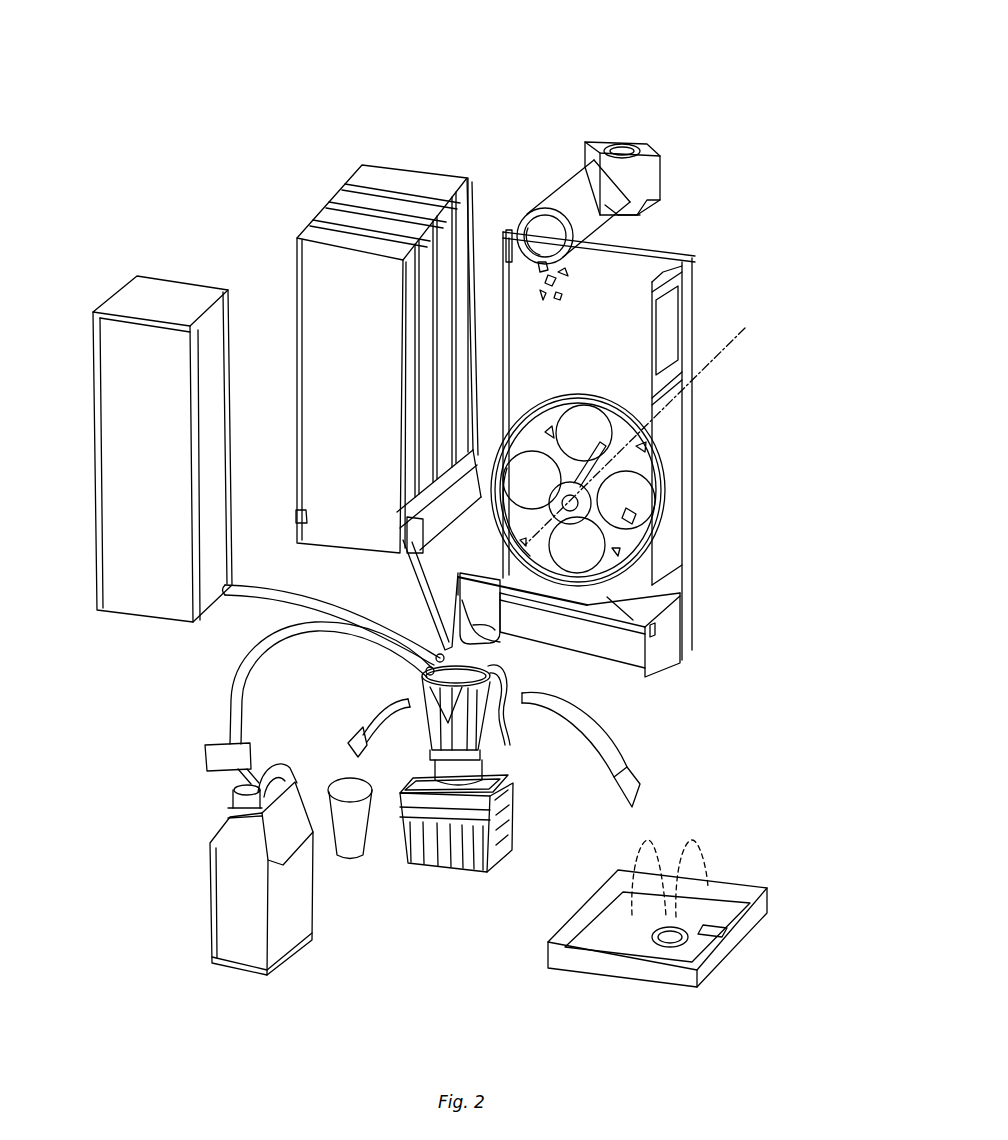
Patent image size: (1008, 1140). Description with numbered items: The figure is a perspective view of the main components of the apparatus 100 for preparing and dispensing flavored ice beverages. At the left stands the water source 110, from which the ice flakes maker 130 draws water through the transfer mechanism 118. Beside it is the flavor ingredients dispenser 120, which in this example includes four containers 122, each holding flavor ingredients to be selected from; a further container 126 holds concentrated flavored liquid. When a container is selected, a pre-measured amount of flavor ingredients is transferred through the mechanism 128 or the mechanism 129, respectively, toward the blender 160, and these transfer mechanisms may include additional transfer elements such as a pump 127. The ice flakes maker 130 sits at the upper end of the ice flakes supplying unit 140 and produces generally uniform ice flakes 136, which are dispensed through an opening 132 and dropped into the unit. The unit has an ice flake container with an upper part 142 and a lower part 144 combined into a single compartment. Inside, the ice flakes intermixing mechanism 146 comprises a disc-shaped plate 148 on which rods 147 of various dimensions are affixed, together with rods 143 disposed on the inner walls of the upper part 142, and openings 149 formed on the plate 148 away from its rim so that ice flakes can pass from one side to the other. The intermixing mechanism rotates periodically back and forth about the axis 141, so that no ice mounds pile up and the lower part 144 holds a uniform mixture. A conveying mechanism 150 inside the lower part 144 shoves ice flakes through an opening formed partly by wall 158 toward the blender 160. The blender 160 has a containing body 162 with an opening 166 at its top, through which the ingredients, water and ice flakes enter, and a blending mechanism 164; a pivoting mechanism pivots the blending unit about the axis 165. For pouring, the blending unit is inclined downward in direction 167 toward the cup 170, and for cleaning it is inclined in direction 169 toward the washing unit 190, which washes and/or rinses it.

The apparatus 100 is at (304, 68).
The water source 110 is at (157, 290).
The transfer mechanism 118 is at (277, 593).
The flavor ingredients dispenser 120 is at (344, 311).
The containers 122 is at (340, 178).
The container 126 is at (213, 867).
The pump 127 is at (205, 756).
The mechanism 128 is at (410, 574).
The mechanism 129 is at (279, 703).
The ice flakes maker 130 is at (619, 145).
The opening 132 is at (580, 447).
The ice flakes 136 is at (573, 293).
The ice flakes supplying unit 140 is at (706, 249).
The axis 141 is at (738, 326).
The upper part 142 is at (690, 398).
The rods 143 is at (651, 433).
The lower part 144 is at (643, 646).
The ice flakes intermixing mechanism 146 is at (624, 403).
The rods 147 is at (592, 507).
The plate 148 is at (637, 552).
The openings 149 is at (510, 230).
The conveying mechanism 150 is at (573, 632).
The wall 158 is at (473, 637).
The blender 160 is at (455, 792).
The containing body 162 is at (420, 685).
The blending mechanism 164 is at (510, 823).
The axis 165 is at (452, 812).
The opening 166 is at (513, 710).
The direction 167 is at (352, 742).
The direction 169 is at (613, 732).
The cup 170 is at (372, 850).
The washing unit 190 is at (797, 914).